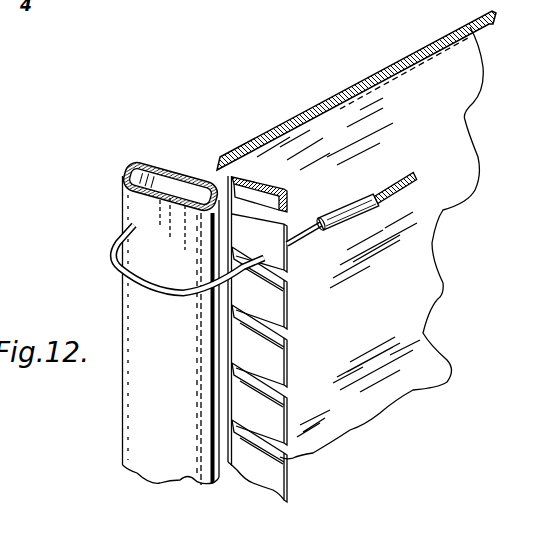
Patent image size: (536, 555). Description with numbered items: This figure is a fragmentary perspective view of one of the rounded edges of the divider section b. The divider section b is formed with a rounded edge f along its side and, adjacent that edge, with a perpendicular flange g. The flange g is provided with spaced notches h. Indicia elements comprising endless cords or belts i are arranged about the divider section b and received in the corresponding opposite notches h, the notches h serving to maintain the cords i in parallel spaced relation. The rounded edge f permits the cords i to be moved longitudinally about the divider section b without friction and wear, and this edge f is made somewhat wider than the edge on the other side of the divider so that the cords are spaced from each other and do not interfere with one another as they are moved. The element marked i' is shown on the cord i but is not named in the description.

The rounded edge f is at (126, 199).
The spaced notch h is at (287, 280).
The perpendicular flange g is at (285, 365).
The endless cord i is at (264, 232).
The sleeve i' is at (346, 219).
The divider section b is at (423, 297).